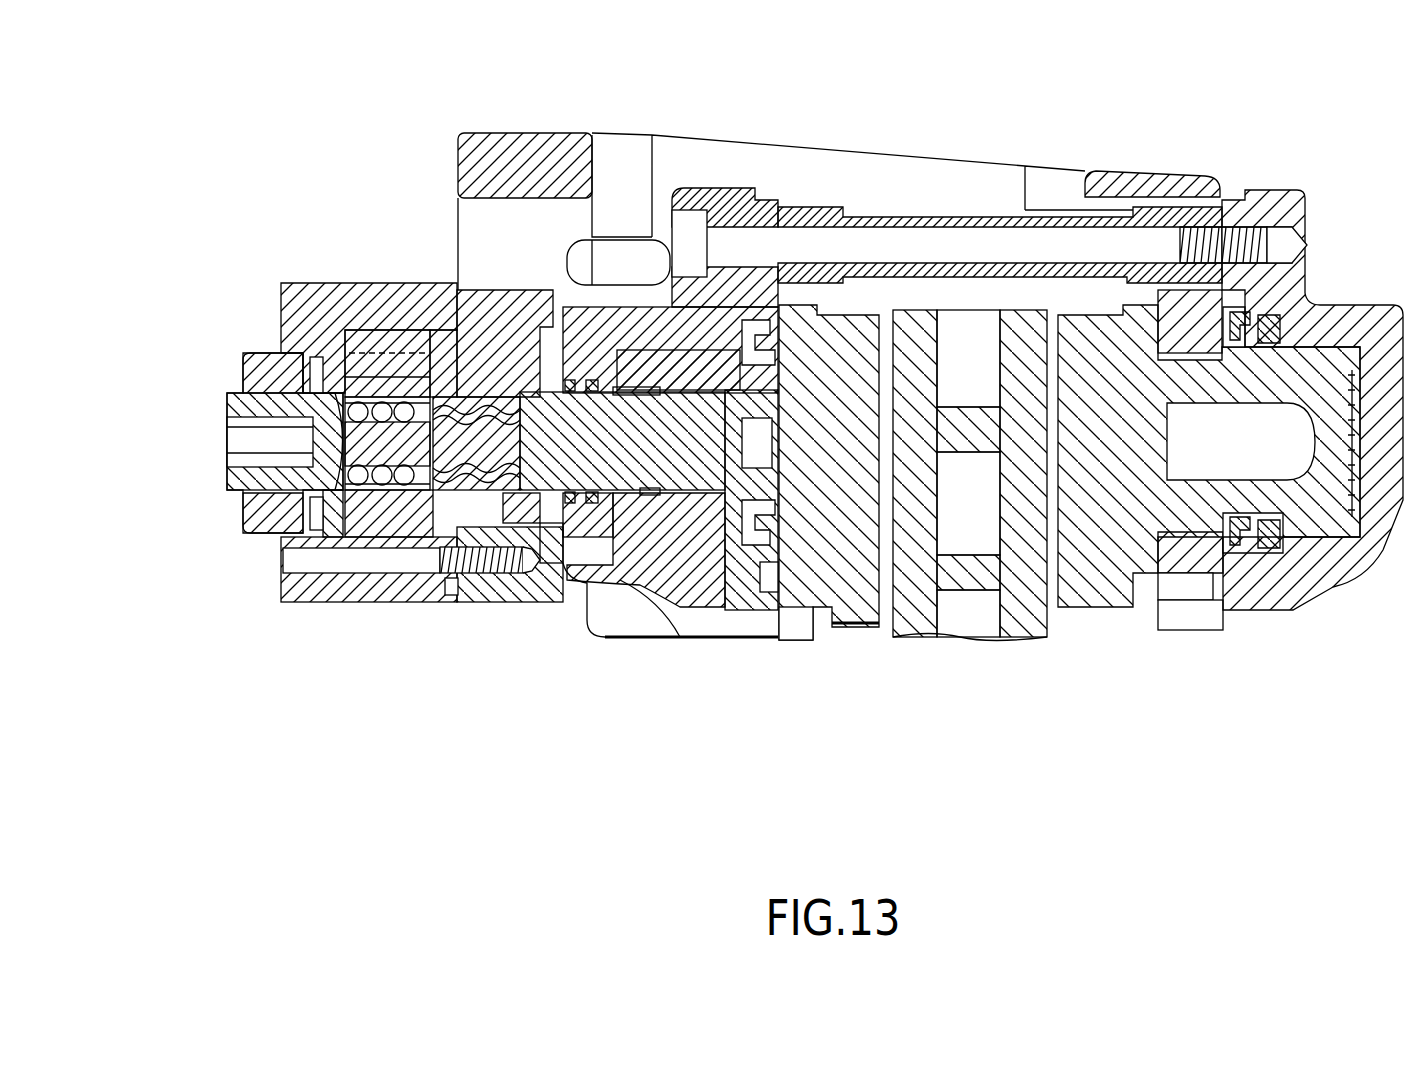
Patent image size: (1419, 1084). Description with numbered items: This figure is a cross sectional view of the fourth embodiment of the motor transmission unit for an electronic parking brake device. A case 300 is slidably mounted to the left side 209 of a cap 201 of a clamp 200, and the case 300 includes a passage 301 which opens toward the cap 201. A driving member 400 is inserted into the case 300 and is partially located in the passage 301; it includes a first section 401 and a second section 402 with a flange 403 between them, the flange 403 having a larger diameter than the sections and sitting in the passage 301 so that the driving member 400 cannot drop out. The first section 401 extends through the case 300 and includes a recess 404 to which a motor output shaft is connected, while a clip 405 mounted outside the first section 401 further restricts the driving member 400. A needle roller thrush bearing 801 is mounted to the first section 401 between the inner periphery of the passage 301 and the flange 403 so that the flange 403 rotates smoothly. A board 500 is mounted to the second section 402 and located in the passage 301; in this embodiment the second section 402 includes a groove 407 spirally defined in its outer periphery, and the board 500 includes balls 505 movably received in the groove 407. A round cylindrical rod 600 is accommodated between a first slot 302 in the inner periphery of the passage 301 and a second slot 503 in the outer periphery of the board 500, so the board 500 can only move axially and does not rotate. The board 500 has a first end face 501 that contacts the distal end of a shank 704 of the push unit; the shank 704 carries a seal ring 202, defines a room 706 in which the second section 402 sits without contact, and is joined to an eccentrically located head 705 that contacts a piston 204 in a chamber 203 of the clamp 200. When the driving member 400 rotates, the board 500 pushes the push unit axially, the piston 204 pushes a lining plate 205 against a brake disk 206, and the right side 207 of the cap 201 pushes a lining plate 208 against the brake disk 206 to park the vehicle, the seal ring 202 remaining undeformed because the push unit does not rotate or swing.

The clamp 200 is at (1325, 190).
The cap 201 is at (790, 128).
The seal ring 202 is at (570, 505).
The chamber 203 is at (622, 520).
The piston 204 is at (688, 548).
The lining plate 205 is at (835, 587).
The brake disk 206 is at (1025, 625).
The right side 207 is at (1215, 312).
The lining plate 208 is at (1133, 595).
The left side 209 is at (600, 287).
The case 300 is at (345, 290).
The passage 301 is at (467, 574).
The first slot 302 is at (358, 334).
The driving member 400 is at (225, 488).
The first section 401 is at (260, 393).
The second section 402 is at (497, 390).
The flange 403 is at (320, 538).
The recess 404 is at (232, 417).
The clip 405 is at (238, 500).
The groove 407 is at (405, 530).
The board 500 is at (343, 527).
The first end face 501 is at (436, 500).
The second slot 503 is at (400, 353).
The balls 505 is at (393, 482).
The rod 600 is at (435, 332).
The shank 704 is at (500, 596).
The head 705 is at (700, 492).
The room 706 is at (507, 387).
The needle roller thrush bearing 801 is at (312, 512).